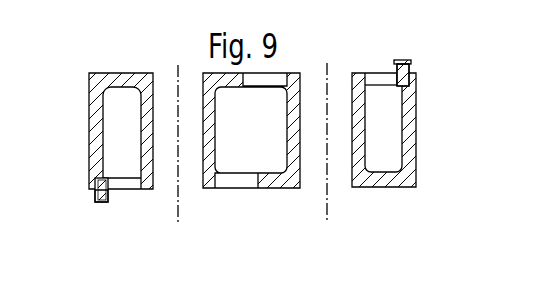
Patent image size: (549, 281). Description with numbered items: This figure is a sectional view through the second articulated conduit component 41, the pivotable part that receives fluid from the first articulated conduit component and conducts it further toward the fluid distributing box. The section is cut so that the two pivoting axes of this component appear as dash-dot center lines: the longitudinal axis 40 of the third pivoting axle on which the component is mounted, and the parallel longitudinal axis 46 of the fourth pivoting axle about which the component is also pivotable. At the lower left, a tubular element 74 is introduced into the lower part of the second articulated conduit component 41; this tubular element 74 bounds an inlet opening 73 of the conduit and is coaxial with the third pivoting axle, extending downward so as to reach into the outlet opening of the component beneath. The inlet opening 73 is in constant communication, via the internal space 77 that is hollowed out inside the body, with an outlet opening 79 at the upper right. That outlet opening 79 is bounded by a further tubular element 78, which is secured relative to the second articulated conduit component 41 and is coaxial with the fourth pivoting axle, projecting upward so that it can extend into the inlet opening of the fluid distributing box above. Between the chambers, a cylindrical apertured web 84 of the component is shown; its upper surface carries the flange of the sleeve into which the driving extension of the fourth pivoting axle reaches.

The longitudinal axis 40 is at (179, 203).
The second articulated conduit component 41 is at (83, 122).
The longitudinal axis 46 is at (328, 203).
The inlet opening 73 is at (110, 196).
The tubular element 74 is at (98, 203).
The internal space 77 is at (115, 155).
The tubular element 78 is at (410, 64).
The outlet opening 79 is at (397, 61).
The cylindrical apertured web 84 is at (358, 135).